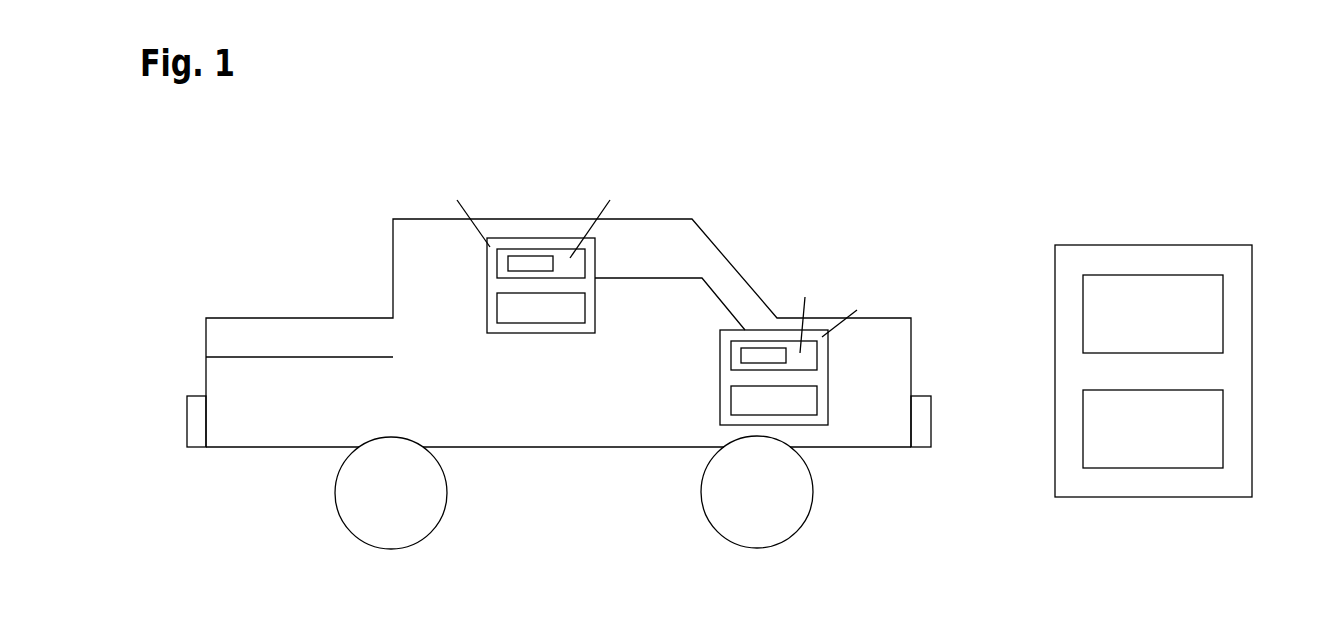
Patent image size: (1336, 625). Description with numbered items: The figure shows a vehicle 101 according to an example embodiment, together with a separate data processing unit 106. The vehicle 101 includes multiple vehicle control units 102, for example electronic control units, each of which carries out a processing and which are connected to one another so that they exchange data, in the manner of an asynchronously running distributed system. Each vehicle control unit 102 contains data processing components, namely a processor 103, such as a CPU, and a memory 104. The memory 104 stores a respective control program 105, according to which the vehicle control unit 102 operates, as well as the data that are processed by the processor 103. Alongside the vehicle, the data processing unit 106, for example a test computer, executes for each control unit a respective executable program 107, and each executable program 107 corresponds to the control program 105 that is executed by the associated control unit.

The vehicle 101 is at (540, 219).
The vehicle control unit 102 is at (487, 288).
The processor 103 is at (585, 263).
The memory 104 is at (585, 305).
The control program 105 is at (496, 264).
The data processing unit 106 is at (1158, 245).
The executable program 107 is at (1223, 313).